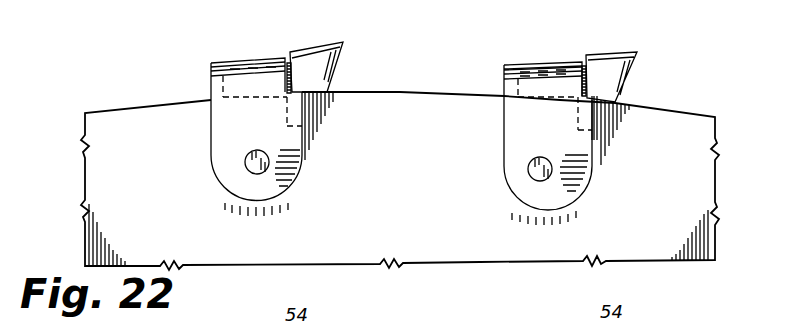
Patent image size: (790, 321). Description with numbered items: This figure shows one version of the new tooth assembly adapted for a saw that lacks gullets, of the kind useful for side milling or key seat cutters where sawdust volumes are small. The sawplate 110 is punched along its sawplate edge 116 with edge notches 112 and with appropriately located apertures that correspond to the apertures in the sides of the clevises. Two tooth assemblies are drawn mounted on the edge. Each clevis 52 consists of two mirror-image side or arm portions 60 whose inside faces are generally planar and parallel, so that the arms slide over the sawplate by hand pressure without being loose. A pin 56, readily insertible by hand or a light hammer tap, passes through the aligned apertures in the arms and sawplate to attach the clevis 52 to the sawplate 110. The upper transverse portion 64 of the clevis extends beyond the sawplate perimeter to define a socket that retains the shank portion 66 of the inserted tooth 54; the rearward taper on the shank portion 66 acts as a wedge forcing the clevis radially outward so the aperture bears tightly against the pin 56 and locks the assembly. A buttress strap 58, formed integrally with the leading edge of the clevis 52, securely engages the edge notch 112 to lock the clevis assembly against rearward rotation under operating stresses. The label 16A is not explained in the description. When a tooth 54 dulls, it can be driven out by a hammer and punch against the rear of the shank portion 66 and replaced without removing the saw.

The sawplate 110 is at (411, 212).
The sawplate edge 116 is at (403, 92).
The clevis 52 is at (478, 144).
The side or arm portion 60 is at (505, 152).
The pin 56 is at (531, 178).
The inserted tooth 54 is at (603, 56).
The upper transverse portion 64 is at (515, 63).
The shank portion 66 is at (553, 62).
The buttress strap 58 is at (582, 124).
The edge notch 112 is at (594, 136).
The tool assembly 16A is at (382, 312).